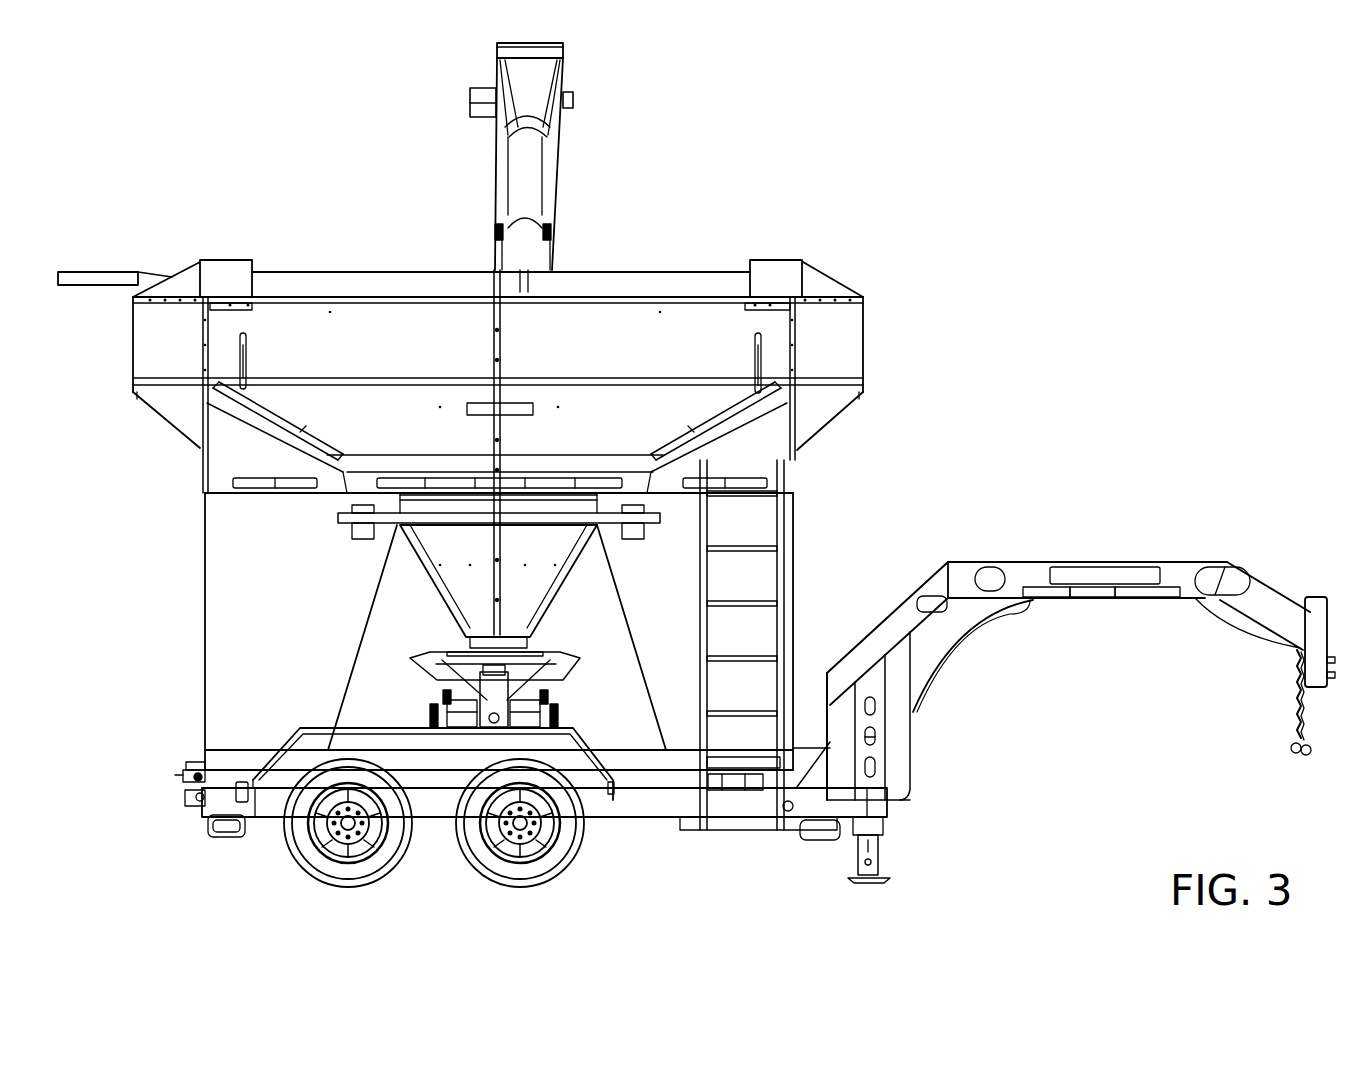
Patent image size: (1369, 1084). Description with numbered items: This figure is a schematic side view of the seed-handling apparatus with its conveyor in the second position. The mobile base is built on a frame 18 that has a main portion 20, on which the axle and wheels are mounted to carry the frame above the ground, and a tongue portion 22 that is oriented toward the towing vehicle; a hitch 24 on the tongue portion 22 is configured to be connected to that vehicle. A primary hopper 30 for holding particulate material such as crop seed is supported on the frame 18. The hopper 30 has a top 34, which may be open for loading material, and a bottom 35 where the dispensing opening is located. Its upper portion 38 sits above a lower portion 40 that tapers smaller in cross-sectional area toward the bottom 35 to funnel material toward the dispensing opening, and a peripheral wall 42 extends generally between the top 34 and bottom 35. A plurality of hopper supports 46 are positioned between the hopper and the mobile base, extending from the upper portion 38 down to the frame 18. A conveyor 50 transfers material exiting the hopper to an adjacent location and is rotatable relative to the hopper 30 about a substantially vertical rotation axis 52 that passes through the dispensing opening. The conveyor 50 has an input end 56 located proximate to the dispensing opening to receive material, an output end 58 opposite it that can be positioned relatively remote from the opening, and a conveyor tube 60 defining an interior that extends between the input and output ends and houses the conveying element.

The frame 18 is at (937, 778).
The main portion 20 is at (648, 832).
The tongue portion 22 is at (1070, 603).
The hitch 24 is at (1327, 597).
The primary hopper 30 is at (778, 226).
The top 34 is at (848, 268).
The bottom 35 is at (420, 628).
The upper portion 38 is at (143, 425).
The lower portion 40 is at (393, 593).
The peripheral wall 42 is at (868, 352).
The hopper supports 46 is at (250, 710).
The conveyor 50 is at (603, 156).
The rotation axis 52 is at (497, 905).
The input end 56 is at (592, 676).
The output end 58 is at (440, 98).
The conveyor tube 60 is at (556, 187).